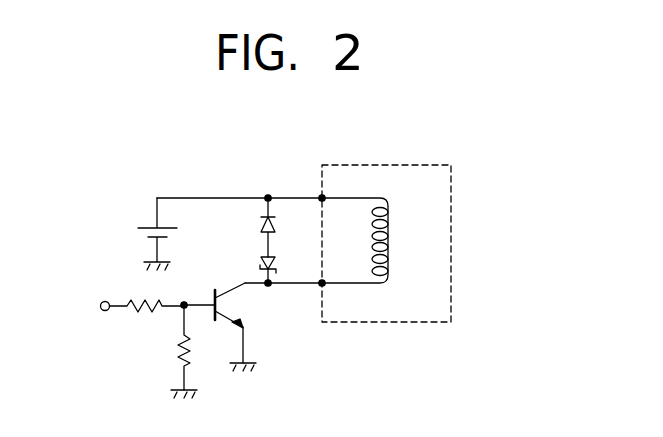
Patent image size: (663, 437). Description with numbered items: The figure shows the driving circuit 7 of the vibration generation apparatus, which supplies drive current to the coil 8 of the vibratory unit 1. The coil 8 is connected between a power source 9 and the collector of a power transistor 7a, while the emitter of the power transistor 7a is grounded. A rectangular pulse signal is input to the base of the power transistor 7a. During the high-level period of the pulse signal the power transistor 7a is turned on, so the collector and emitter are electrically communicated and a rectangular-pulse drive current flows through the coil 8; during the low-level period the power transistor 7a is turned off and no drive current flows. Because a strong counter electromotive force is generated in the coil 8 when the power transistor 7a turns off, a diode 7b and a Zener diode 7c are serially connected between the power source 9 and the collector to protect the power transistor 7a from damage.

The vibratory unit 1 is at (451, 180).
The driving circuit 7 is at (262, 181).
The power transistor 7a is at (238, 307).
The diode 7b is at (255, 224).
The Zener diode 7c is at (254, 262).
The coil 8 is at (390, 219).
The power source 9 is at (135, 235).